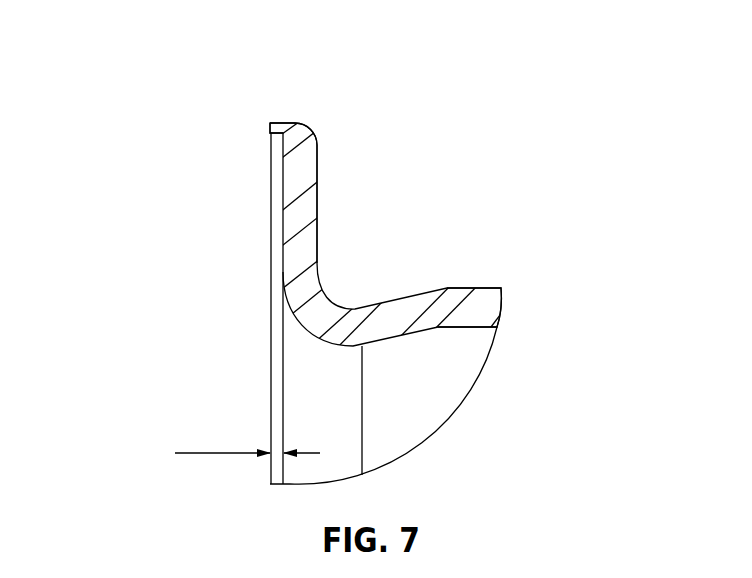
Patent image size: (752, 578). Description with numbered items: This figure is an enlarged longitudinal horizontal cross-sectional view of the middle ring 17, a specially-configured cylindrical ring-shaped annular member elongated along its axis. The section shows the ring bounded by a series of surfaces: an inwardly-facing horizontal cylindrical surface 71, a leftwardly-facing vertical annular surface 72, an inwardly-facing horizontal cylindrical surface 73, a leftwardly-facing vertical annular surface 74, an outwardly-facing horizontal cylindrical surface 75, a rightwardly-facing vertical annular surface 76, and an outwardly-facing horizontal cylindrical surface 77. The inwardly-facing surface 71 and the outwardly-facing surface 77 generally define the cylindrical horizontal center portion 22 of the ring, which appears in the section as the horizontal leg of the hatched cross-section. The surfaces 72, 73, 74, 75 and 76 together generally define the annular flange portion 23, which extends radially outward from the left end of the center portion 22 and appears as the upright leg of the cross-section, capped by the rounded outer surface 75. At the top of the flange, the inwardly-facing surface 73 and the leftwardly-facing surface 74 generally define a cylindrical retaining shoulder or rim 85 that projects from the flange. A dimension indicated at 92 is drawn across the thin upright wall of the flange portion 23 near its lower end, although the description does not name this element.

The middle ring 17 is at (334, 282).
The center portion 22 is at (442, 368).
The annular flange portion 23 is at (289, 245).
The inwardly-facing horizontal cylindrical surface 71 is at (466, 328).
The leftwardly-facing vertical annular surface 72 is at (283, 250).
The inwardly-facing horizontal cylindrical surface 73 is at (282, 134).
The leftwardly-facing vertical annular surface 74 is at (270, 125).
The outwardly-facing horizontal cylindrical surface 75 is at (290, 122).
The rightwardly-facing vertical annular surface 76 is at (317, 218).
The outwardly-facing horizontal cylindrical surface 77 is at (478, 288).
The retaining shoulder 85 is at (257, 148).
The plate thickness 92 is at (218, 455).